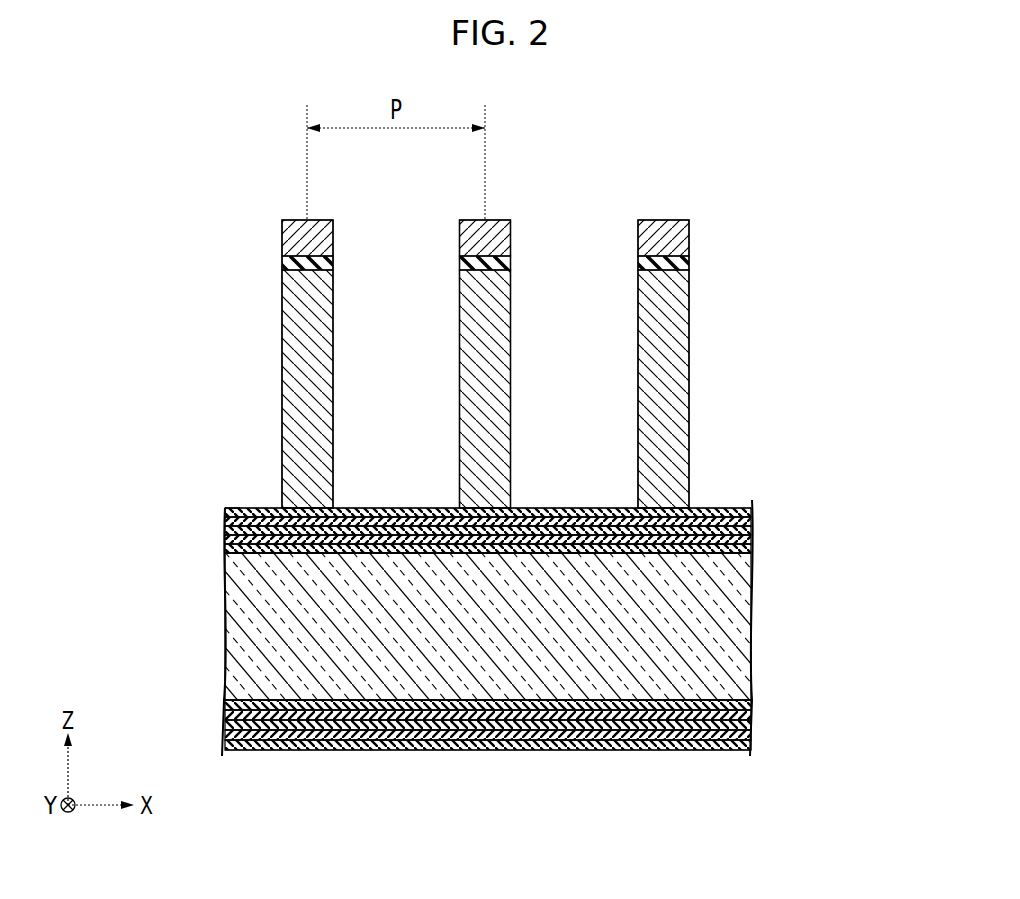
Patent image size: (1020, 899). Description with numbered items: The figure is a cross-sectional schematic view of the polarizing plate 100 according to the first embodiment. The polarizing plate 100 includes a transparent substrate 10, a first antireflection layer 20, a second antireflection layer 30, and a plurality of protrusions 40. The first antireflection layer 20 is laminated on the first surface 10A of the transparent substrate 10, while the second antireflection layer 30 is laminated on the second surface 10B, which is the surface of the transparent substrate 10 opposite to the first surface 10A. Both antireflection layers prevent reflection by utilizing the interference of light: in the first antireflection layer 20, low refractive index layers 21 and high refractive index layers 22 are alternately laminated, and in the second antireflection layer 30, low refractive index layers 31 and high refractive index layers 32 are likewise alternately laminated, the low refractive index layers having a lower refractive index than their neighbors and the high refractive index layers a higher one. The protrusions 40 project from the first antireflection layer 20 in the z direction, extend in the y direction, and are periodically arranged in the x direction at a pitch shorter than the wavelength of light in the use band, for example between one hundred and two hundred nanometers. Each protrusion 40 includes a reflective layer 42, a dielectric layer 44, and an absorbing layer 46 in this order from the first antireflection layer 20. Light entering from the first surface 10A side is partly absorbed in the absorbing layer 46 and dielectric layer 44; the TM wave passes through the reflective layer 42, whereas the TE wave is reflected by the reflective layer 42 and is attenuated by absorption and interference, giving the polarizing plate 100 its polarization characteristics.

The polarizing plate 100 is at (772, 180).
The transparent substrate 10 is at (738, 618).
The first surface 10A is at (258, 546).
The second surface 10B is at (258, 728).
The first antireflection layer 20 is at (555, 527).
The low refractive index layer 21 is at (752, 512).
The high refractive index layer 22 is at (752, 521).
The second antireflection layer 30 is at (555, 720).
The low refractive index layer 31 is at (752, 705).
The high refractive index layer 32 is at (752, 715).
The protrusion 40 is at (517, 325).
The reflective layer 42 is at (325, 368).
The dielectric layer 44 is at (325, 264).
The absorbing layer 46 is at (328, 238).